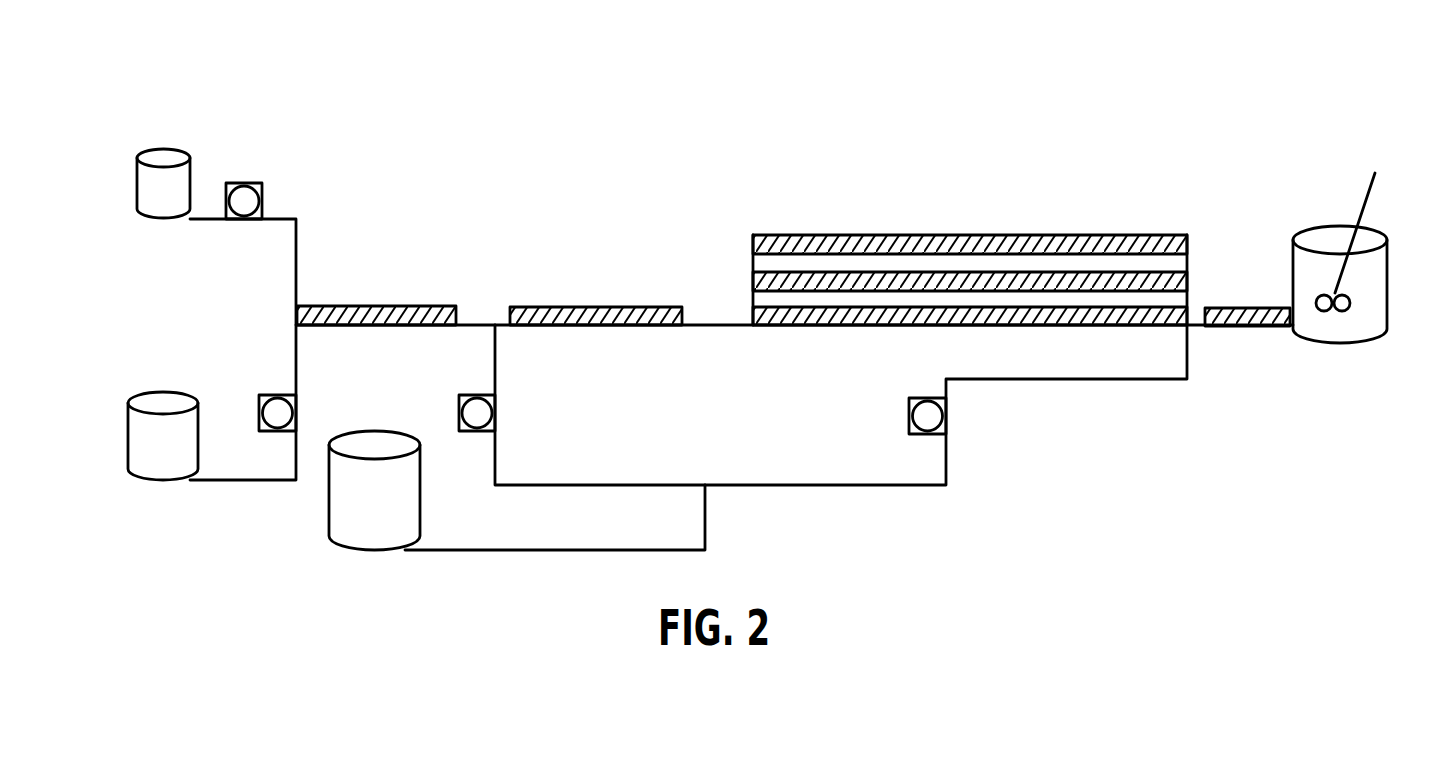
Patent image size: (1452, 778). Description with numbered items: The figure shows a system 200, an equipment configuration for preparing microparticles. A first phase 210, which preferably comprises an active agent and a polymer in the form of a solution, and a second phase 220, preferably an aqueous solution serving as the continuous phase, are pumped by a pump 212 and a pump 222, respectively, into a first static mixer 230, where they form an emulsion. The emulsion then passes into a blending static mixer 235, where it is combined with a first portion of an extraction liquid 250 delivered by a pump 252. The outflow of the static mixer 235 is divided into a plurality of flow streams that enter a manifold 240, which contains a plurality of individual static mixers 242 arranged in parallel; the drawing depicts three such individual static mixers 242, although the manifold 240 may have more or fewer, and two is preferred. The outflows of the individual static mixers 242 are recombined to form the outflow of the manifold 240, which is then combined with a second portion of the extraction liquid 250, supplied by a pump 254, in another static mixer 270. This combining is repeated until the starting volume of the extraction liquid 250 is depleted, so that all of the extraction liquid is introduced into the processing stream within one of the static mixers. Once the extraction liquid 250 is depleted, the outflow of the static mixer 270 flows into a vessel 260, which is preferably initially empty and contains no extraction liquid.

The system 200 is at (1052, 103).
The first phase 210 is at (147, 180).
The pump 212 is at (262, 183).
The second phase 220 is at (139, 436).
The pump 222 is at (261, 395).
The first static mixer 230 is at (380, 305).
The static mixer 235 is at (592, 307).
The manifold 240 is at (921, 218).
The individual static mixers 242 is at (1057, 324).
The extraction liquid 250 is at (413, 519).
The pump 252 is at (462, 395).
The pump 254 is at (910, 398).
The vessel 260 is at (1371, 277).
The static mixer 270 is at (1237, 329).